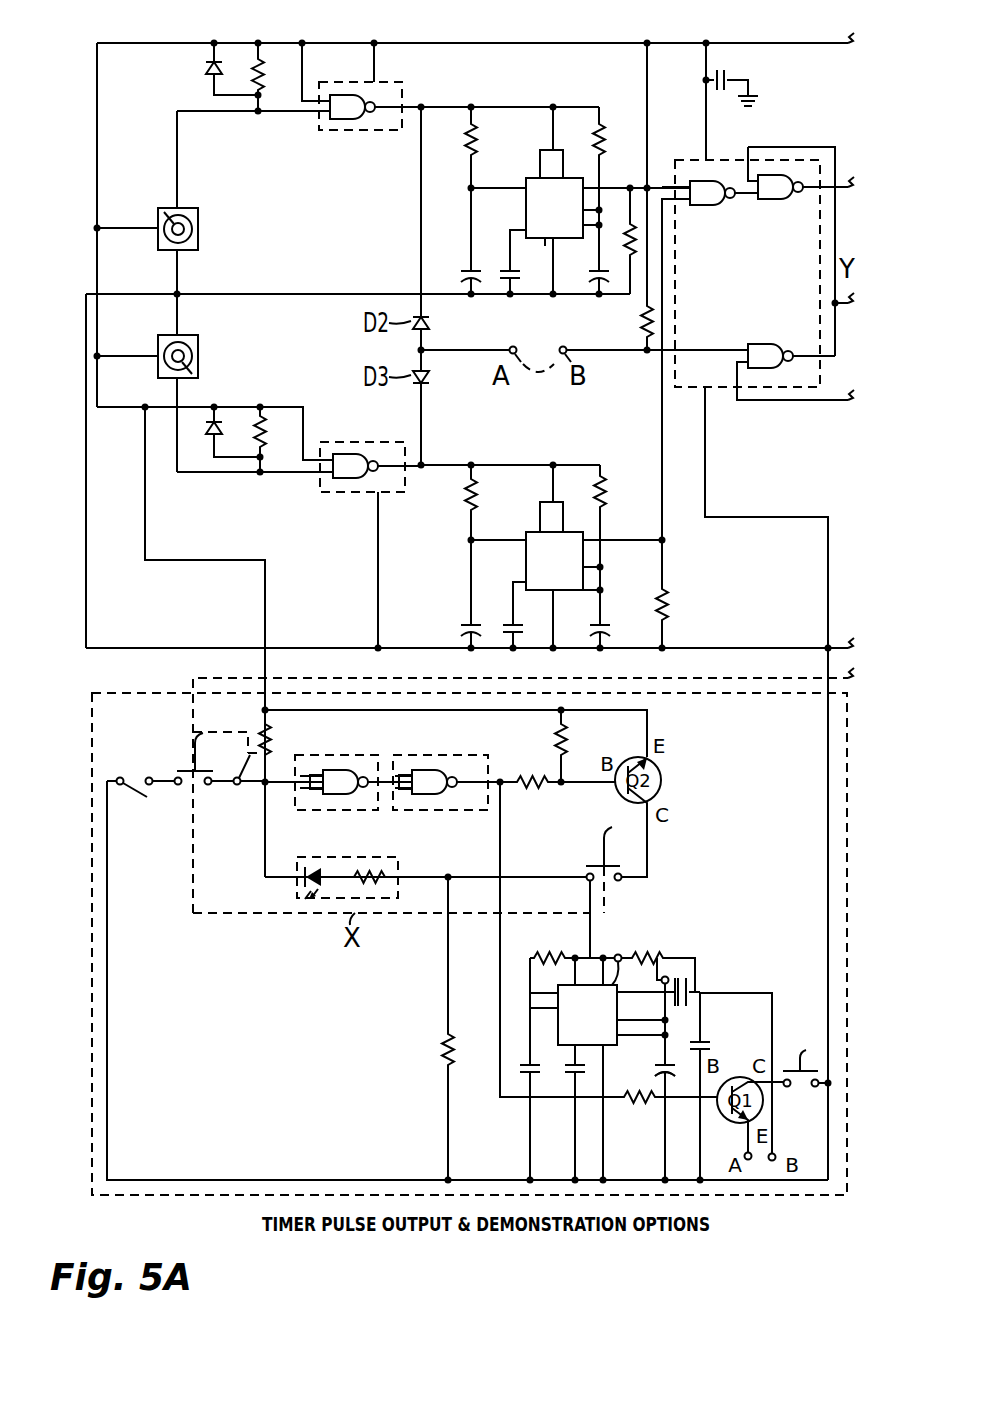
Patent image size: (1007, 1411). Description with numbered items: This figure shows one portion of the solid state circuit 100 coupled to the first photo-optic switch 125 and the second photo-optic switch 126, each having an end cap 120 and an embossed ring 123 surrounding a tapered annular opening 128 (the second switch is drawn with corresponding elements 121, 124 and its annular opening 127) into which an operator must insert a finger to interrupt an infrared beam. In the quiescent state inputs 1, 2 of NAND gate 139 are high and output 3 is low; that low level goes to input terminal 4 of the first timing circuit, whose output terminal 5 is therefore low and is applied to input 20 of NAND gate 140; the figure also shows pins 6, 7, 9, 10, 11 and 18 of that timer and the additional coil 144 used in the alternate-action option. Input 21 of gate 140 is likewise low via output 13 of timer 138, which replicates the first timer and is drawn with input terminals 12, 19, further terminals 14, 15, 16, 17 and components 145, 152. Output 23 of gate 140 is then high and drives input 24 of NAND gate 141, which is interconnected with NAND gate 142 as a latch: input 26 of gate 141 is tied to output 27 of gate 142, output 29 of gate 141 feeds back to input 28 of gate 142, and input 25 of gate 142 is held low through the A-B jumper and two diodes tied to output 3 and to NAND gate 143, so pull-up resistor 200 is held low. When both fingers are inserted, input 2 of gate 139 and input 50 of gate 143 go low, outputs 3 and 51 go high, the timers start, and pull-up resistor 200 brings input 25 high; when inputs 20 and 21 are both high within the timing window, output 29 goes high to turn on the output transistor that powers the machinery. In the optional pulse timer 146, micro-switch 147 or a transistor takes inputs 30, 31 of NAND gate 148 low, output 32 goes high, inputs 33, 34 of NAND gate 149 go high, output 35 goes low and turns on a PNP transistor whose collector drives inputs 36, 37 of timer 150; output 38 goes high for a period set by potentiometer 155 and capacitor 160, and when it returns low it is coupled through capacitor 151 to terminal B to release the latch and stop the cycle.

The solid state circuit 100 is at (75, 428).
The end cap 120 is at (159, 214).
The indicator lamp 121 is at (199, 356).
The embossed ring 123 is at (198, 229).
The lamp lead 124 is at (194, 335).
The first photo-optic switch 125 is at (172, 256).
The second photo-optic switch 126 is at (164, 334).
The annular opening 127 is at (193, 376).
The tapered annular opening 128 is at (161, 206).
The timing circuit 138 is at (588, 464).
The NAND gate 139 is at (347, 121).
The NAND gate 140 is at (706, 181).
The NAND gate 141 is at (780, 226).
The NAND gate 142 is at (760, 344).
The NAND gate 143 is at (346, 491).
The additional coil 144 is at (471, 160).
The resistor 145 is at (471, 490).
The pulse timer 146 is at (690, 908).
The micro-switch 147 is at (142, 800).
The NAND gate 148 is at (341, 770).
The NAND gate 149 is at (434, 770).
The timer circuit 150 is at (548, 994).
The capacitor 151 is at (692, 984).
The resistor 152 is at (666, 597).
The potentiometer 155 is at (657, 955).
The capacitor 160 is at (657, 1066).
The pull-up resistor 200 is at (647, 316).
The input of NAND gate 139 1 is at (332, 98).
The input of NAND gate 139 2 is at (325, 117).
The output of NAND gate 139 3 is at (373, 101).
The input terminal of timing circuit 4 is at (563, 173).
The output terminal of timing circuit 5 is at (544, 240).
The timer pin 6 is at (594, 211).
The timer pin 7 is at (592, 226).
The timer pin 9 is at (556, 240).
The timer pin 10 is at (526, 227).
The timer pin 11 is at (526, 184).
The input terminal of timer 138 12 is at (560, 531).
The output of timer 138 13 is at (600, 540).
The timer pin 14 is at (601, 567).
The timer pin 15 is at (601, 590).
The timer pin 16 is at (554, 591).
The timer pin 17 is at (526, 580).
The timer pin 18 is at (540, 168).
The input terminal of timer 138 19 is at (544, 530).
The input terminal of NAND gate 140 20 is at (689, 186).
The input terminal of NAND gate 140 21 is at (693, 206).
The output of NAND gate 140 23 is at (712, 206).
The input of NAND gate 141 24 is at (761, 200).
The input of NAND gate 142 25 is at (748, 349).
The input of NAND gate 141 26 is at (763, 175).
The output of NAND gate 142 27 is at (791, 352).
The input of NAND gate 142 28 is at (737, 364).
The output of NAND gate 141 29 is at (801, 193).
The input of NAND gate 148 30 is at (322, 789).
The input of NAND gate 148 31 is at (318, 776).
The output of NAND gate 148 32 is at (362, 794).
The input of NAND gate 149 33 is at (408, 776).
The input of NAND gate 149 34 is at (410, 790).
The output of NAND gate 149 35 is at (453, 794).
The input of timer 150 36 is at (576, 958).
The input of timer 150 37 is at (604, 958).
The output of timer 150 38 is at (622, 956).
The input of NAND gate 143 50 is at (326, 479).
The output terminal of NAND gate 143 51 is at (376, 461).